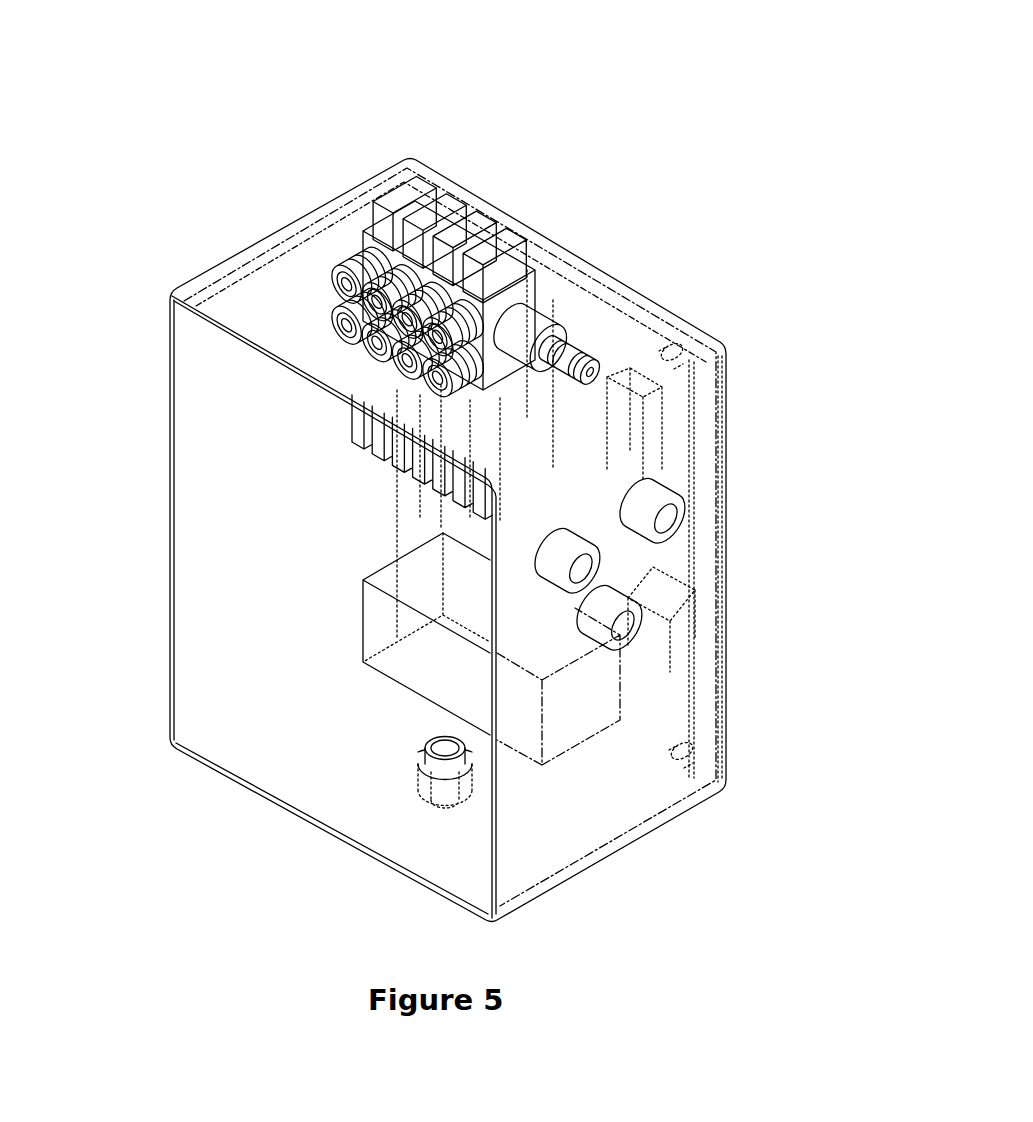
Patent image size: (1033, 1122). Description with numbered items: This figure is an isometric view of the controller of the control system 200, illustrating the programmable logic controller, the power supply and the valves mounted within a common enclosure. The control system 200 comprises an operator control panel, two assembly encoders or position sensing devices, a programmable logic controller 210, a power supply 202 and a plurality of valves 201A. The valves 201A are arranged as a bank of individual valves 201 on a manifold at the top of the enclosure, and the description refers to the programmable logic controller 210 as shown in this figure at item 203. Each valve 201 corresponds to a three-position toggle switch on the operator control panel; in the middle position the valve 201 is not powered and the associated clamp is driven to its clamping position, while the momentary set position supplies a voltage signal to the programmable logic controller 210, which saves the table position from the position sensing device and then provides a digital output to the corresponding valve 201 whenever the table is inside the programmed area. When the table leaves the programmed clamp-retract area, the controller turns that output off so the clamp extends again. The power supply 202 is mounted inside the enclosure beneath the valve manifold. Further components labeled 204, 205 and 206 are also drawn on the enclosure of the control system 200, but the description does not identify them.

The control system 200 is at (625, 242).
The valve 201 is at (433, 173).
The plurality of valves 201A is at (422, 130).
The power supply 202 is at (414, 648).
The programmable logic controller 203 is at (367, 456).
The connector 204 is at (611, 641).
The connector 205 is at (660, 490).
The fitting 206 is at (423, 770).
The programmable logic controller 210 is at (428, 514).